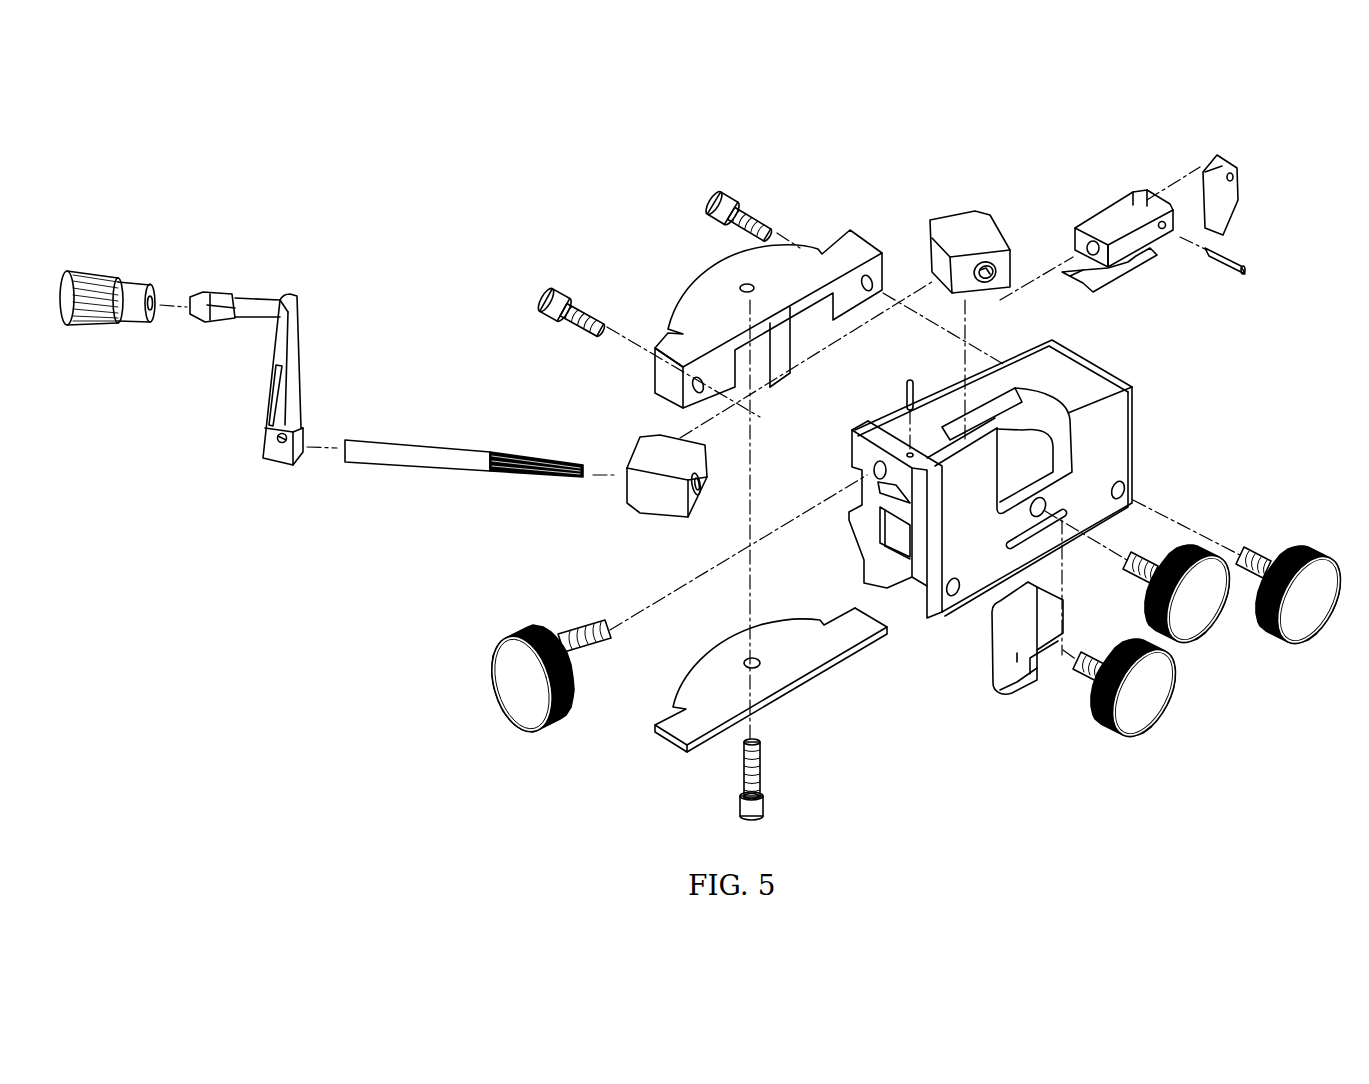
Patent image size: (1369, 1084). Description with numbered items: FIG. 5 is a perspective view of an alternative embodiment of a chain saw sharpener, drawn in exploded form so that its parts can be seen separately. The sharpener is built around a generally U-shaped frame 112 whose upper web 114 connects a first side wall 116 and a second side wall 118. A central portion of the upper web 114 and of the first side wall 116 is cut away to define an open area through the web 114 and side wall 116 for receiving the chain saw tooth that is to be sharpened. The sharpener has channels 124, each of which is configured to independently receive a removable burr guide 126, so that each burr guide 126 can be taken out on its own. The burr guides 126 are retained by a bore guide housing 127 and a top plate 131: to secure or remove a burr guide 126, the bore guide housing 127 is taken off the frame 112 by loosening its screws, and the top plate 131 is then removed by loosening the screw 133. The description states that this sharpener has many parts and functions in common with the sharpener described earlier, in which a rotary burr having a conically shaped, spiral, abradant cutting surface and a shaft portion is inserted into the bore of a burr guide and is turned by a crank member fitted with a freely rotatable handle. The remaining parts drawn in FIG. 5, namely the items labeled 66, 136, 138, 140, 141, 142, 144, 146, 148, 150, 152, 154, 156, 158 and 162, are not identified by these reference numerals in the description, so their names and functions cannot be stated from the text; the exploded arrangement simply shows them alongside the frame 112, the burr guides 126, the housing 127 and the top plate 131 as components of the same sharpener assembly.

The thumb screw 66 is at (533, 690).
The U-shaped frame 112 is at (1144, 376).
The upper web 114 is at (1068, 380).
The first side wall 116 is at (982, 550).
The second side wall 118 is at (874, 561).
The channels 124 is at (711, 186).
The removable burr guide 126 is at (652, 517).
The bore guide housing 127 is at (870, 195).
The top plate 131 is at (692, 752).
The screw 133 is at (766, 798).
The threaded bore of nut 136 is at (998, 262).
The thumb screw 138 is at (1207, 606).
The thumb screws 140 is at (1318, 606).
The retaining clip 141 is at (1004, 696).
The mounting holes 142 is at (1132, 482).
The brush assembly 144 is at (366, 350).
The brush bristles 146 is at (535, 480).
The brush handle rod 148 is at (417, 470).
The pivot lever 150 is at (292, 290).
The knurled knob 152 is at (130, 272).
The clamp assembly 154 is at (1093, 174).
The clamp body 156 is at (1120, 196).
The clamp lever 158 is at (1233, 163).
The clamp rail 162 is at (1122, 271).